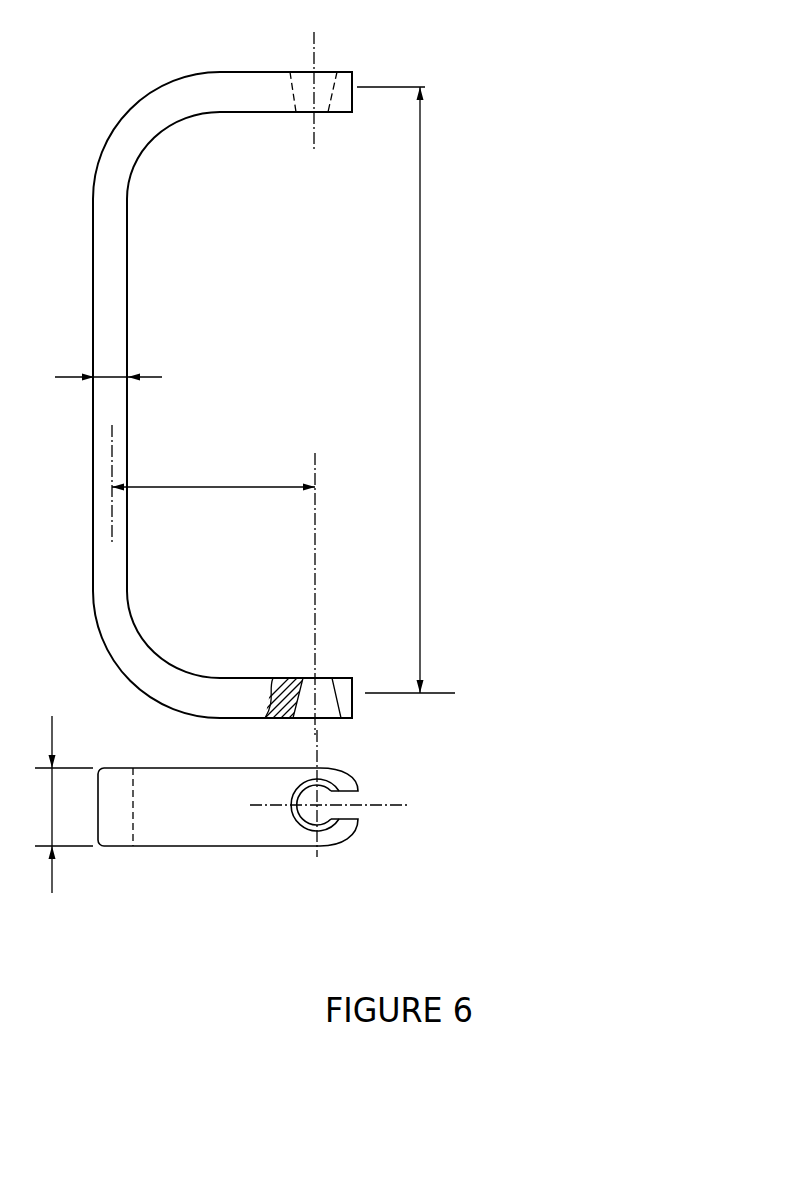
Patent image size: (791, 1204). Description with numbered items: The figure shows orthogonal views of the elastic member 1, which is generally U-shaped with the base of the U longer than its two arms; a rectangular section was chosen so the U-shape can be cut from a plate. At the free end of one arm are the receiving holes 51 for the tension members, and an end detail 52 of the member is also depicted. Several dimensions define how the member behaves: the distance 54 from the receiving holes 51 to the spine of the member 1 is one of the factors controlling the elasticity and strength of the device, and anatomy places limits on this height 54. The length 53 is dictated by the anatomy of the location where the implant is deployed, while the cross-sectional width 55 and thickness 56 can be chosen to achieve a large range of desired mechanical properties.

The elastic member 1 is at (117, 256).
The receiving holes 51 is at (327, 697).
The slotted clip opening 52 is at (350, 798).
The length 53 is at (420, 468).
The distance 54 is at (203, 487).
The width 55 is at (112, 377).
The thickness 56 is at (52, 738).